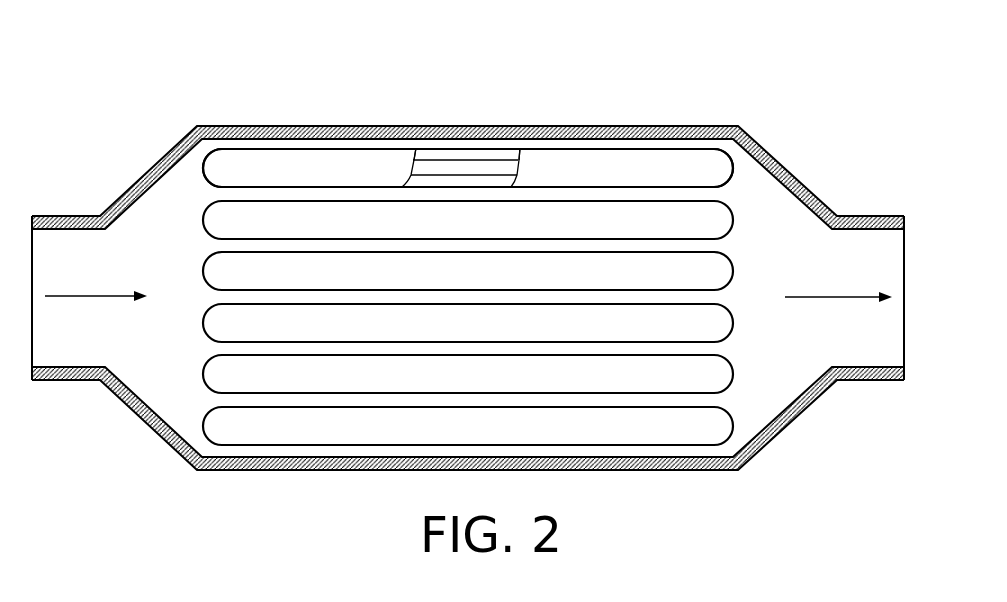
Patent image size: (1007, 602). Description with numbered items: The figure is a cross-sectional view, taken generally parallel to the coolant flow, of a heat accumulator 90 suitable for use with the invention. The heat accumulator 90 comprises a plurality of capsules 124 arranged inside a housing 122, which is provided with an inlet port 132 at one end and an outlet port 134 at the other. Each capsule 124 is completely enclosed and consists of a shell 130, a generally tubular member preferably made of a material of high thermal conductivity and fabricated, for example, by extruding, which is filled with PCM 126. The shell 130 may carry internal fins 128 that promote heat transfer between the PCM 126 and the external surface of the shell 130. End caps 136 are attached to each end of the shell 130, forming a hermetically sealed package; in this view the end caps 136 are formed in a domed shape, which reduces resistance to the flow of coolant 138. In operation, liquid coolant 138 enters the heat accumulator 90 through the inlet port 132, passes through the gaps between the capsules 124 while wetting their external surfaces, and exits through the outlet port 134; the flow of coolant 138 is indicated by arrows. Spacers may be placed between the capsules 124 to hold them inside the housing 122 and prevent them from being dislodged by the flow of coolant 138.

The heat accumulator 90 is at (677, 105).
The housing 122 is at (322, 125).
The capsule 124 is at (363, 149).
The PCM 126 is at (507, 168).
The internal fins 128 is at (455, 158).
The shell 130 is at (435, 160).
The inlet port 132 is at (43, 215).
The outlet port 134 is at (857, 216).
The end caps 136 is at (203, 165).
The coolant 138 is at (163, 342).